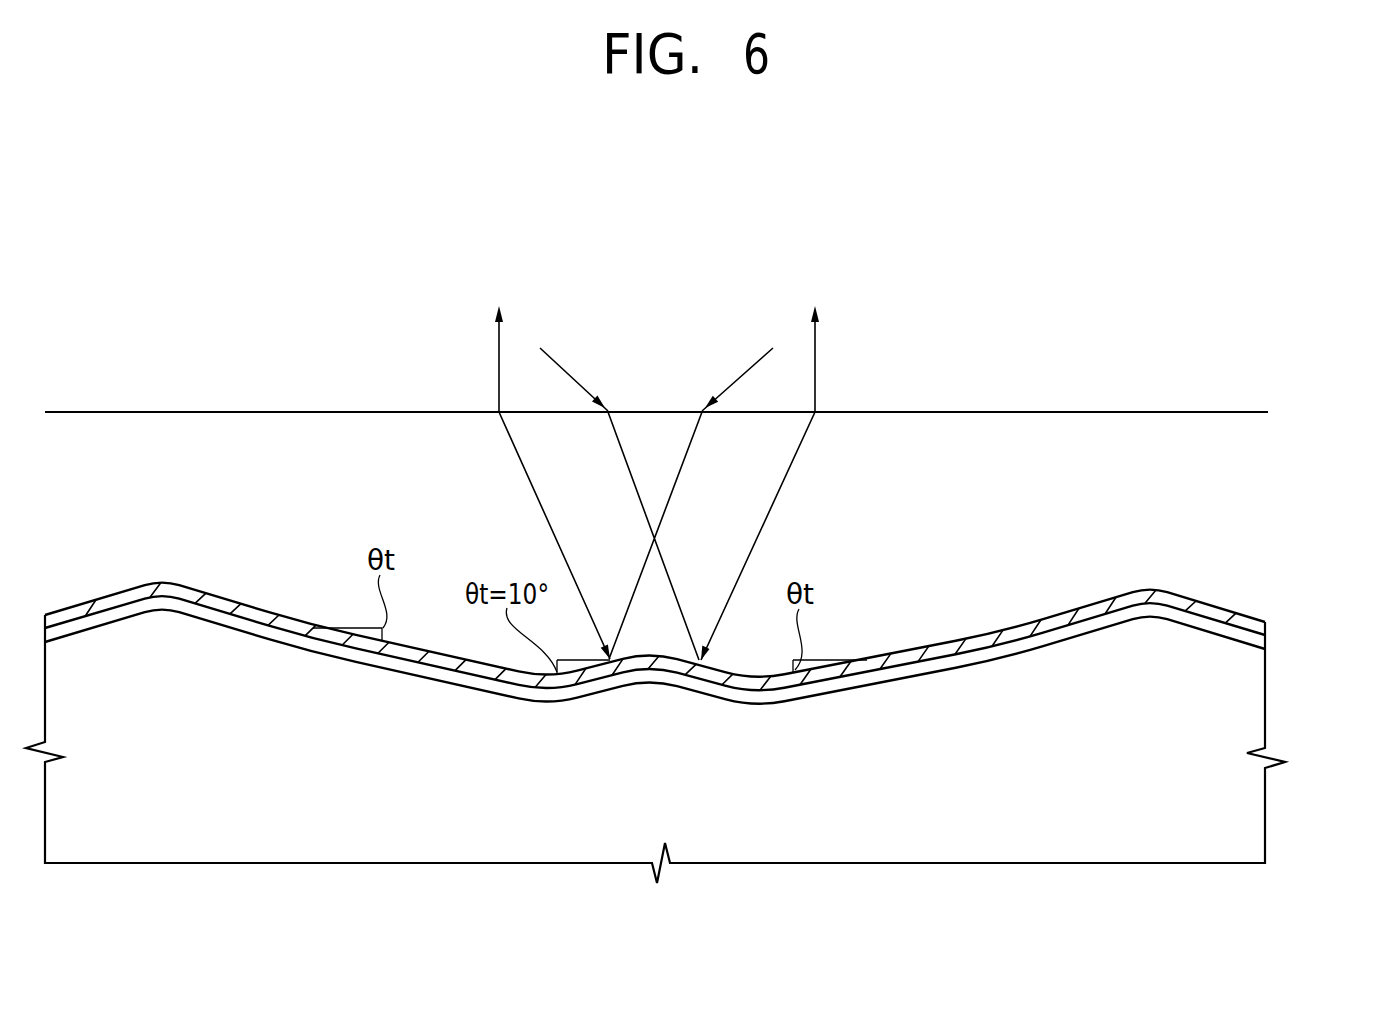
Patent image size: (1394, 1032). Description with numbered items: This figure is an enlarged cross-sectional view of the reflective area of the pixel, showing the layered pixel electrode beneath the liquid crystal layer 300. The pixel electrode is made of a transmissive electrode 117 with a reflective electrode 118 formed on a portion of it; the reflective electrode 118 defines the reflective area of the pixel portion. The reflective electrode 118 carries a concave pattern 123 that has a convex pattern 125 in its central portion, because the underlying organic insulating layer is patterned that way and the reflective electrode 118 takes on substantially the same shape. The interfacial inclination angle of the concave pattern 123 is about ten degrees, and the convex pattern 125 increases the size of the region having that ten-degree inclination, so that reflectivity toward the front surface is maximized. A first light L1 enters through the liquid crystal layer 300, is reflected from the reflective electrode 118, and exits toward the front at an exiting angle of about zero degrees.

The liquid crystal layer 300 is at (1278, 418).
The reflective electrode 118 is at (1267, 627).
The transmissive electrode 117 is at (1267, 645).
The concave pattern 123 is at (322, 654).
The convex pattern 125 is at (654, 680).
The first light L1 is at (746, 370).